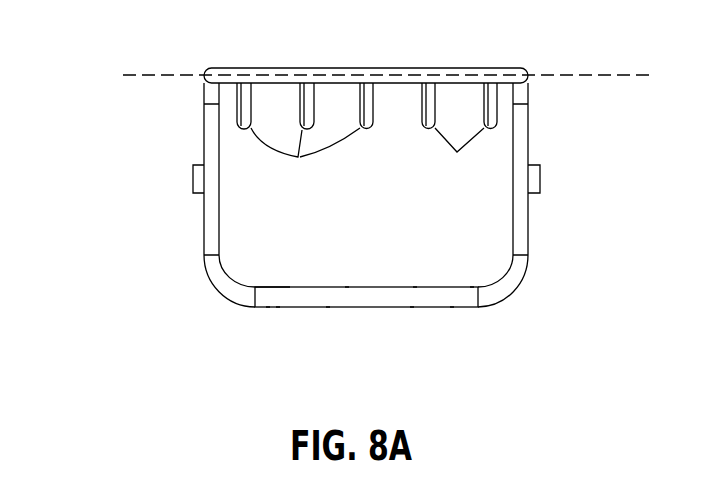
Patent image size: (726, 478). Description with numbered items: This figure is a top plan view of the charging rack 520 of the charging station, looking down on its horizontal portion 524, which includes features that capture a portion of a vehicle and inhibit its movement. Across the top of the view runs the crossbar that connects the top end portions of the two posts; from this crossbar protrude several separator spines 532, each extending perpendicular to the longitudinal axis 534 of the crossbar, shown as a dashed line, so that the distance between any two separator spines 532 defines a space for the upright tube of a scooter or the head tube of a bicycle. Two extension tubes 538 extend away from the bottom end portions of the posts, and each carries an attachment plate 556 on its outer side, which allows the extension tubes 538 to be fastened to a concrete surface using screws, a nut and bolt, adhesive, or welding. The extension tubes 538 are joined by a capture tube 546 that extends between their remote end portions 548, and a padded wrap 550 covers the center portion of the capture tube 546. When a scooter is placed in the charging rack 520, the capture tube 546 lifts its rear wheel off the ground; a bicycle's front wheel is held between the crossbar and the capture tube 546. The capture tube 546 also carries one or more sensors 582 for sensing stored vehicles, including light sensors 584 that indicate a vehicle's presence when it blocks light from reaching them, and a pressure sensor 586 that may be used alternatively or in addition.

The charging rack 520 is at (575, 82).
The horizontal portion 524 is at (371, 245).
The separator spines 532 is at (367, 139).
The longitudinal axis 534 is at (635, 75).
The extension tubes 538 is at (528, 135).
The capture tube 546 is at (493, 293).
The remote end portions 548 is at (535, 292).
The padded wrap 550 is at (365, 307).
The attachment plates 556 is at (541, 178).
The sensors 582 is at (284, 268).
The light sensors 584 is at (268, 308).
The pressure sensor 586 is at (347, 287).